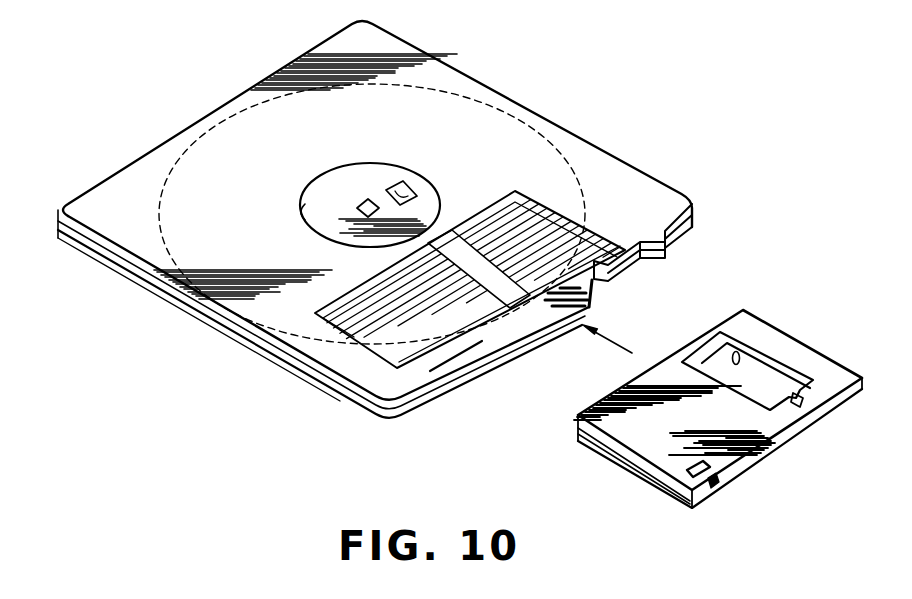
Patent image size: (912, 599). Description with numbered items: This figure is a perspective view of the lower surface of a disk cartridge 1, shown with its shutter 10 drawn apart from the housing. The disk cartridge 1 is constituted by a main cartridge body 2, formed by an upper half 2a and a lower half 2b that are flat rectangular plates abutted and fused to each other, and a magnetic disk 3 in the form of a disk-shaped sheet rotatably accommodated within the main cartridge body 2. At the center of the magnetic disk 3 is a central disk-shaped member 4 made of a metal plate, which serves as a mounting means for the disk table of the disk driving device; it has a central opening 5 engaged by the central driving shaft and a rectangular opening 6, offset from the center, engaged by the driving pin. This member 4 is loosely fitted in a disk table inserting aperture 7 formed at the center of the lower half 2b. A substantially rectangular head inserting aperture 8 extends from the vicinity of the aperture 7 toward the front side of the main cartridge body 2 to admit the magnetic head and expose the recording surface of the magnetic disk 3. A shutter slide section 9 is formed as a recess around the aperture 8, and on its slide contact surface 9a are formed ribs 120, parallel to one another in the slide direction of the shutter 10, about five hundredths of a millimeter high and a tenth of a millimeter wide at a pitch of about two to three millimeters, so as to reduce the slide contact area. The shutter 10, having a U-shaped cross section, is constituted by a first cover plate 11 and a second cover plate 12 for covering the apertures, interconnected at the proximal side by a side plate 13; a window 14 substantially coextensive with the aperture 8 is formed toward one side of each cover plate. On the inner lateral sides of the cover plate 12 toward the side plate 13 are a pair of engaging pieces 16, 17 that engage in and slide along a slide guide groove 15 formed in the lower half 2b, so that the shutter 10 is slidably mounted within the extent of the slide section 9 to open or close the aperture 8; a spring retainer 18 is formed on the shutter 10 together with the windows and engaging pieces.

The disk cartridge 1 is at (364, 236).
The main cartridge body 2 is at (355, 219).
The upper half 2a is at (321, 314).
The lower half 2b is at (97, 203).
The magnetic disk 3 is at (472, 110).
The central disk-shaped member 4 is at (333, 195).
The central opening 5 is at (365, 198).
The rectangular opening 6 is at (410, 188).
The disk table inserting aperture 7 is at (304, 208).
The head inserting aperture 8 is at (590, 302).
The shutter slide section 9 is at (362, 368).
The slide contact surface 9a is at (460, 343).
The shutter 10 is at (717, 380).
The first cover plate 11 is at (622, 463).
The second cover plate 12 is at (815, 357).
The side plate 13 is at (767, 445).
The window 14 is at (736, 351).
The slide guide groove 15 is at (448, 365).
The engaging piece 16 is at (677, 498).
The engaging piece 17 is at (800, 400).
The spring retainer 18 is at (713, 487).
The rib 120 is at (540, 190).